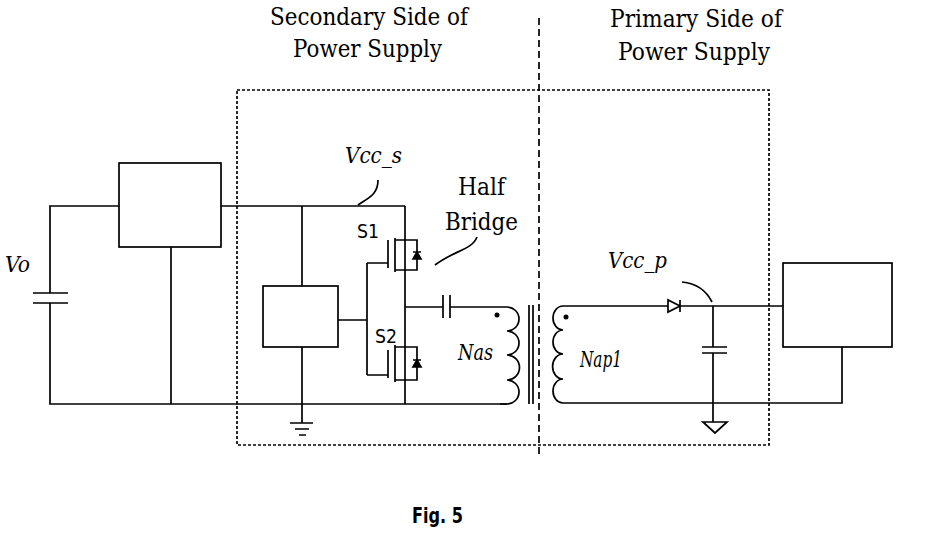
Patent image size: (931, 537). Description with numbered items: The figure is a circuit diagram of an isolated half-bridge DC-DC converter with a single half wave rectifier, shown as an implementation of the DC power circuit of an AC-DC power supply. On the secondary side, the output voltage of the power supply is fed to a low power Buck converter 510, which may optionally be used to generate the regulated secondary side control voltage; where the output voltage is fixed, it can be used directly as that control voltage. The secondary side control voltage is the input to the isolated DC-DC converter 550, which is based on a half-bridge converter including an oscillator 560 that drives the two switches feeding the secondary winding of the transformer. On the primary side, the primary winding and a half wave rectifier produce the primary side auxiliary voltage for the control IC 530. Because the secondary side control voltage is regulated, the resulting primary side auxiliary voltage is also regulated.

The Buck converter 510 is at (119, 182).
The control IC 530 is at (807, 262).
The isolated DC-DC converter 550 is at (238, 108).
The oscillator 560 is at (280, 283).